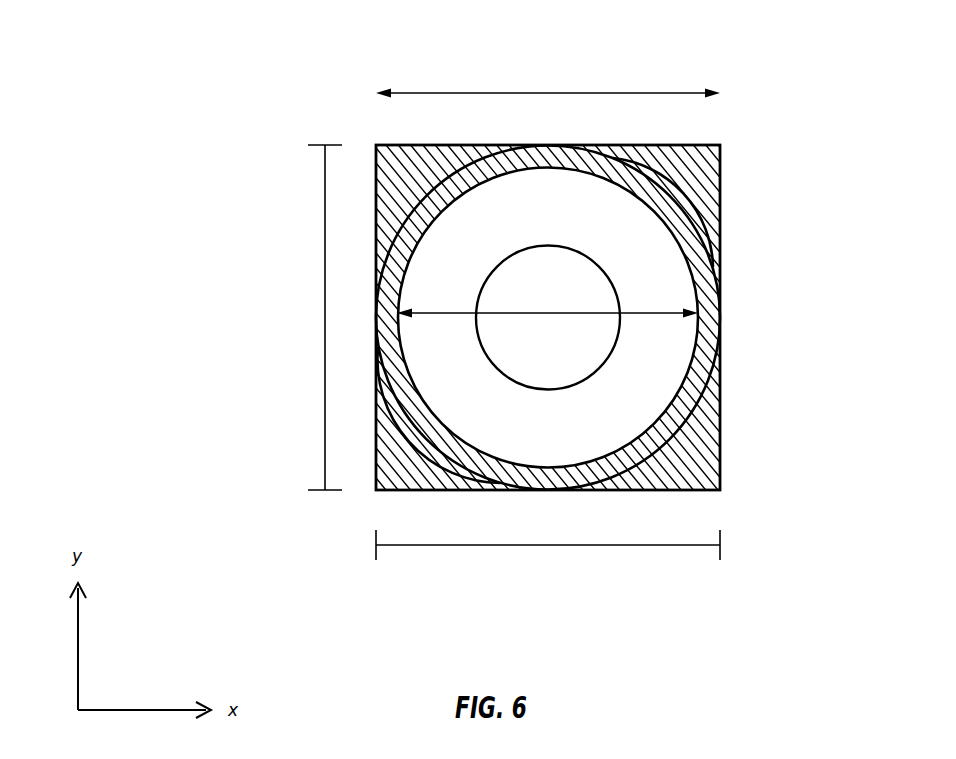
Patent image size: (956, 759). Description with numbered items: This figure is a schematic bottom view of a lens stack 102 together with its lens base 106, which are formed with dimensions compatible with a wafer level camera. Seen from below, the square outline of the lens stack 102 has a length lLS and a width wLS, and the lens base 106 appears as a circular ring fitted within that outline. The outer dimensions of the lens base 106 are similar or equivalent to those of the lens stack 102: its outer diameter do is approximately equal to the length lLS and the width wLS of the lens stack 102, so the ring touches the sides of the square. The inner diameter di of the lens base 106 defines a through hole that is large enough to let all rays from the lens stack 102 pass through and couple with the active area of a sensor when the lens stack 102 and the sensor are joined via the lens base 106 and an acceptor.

The lens stack 102 is at (529, 300).
The lens base 106 is at (720, 420).
The outer diameter do is at (548, 84).
The inner diameter di is at (547, 304).
The length lLS is at (317, 317).
The width wLS is at (548, 557).